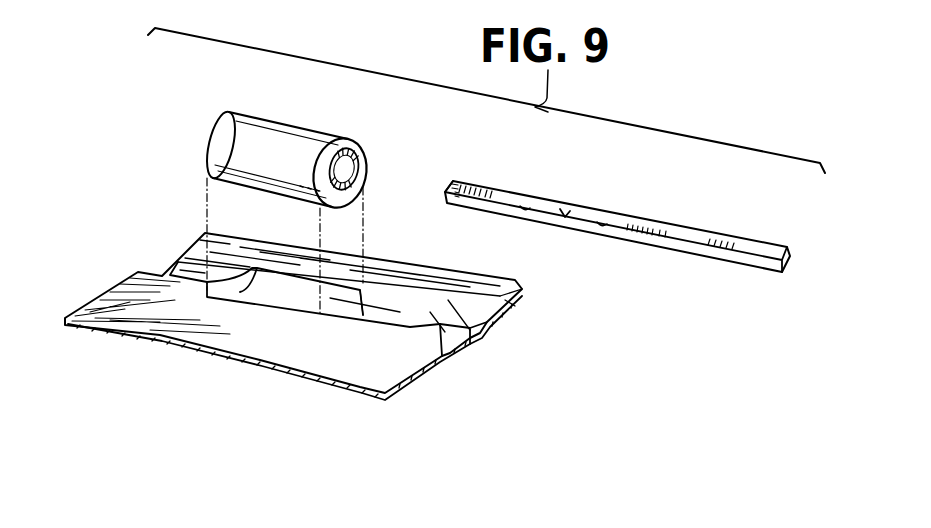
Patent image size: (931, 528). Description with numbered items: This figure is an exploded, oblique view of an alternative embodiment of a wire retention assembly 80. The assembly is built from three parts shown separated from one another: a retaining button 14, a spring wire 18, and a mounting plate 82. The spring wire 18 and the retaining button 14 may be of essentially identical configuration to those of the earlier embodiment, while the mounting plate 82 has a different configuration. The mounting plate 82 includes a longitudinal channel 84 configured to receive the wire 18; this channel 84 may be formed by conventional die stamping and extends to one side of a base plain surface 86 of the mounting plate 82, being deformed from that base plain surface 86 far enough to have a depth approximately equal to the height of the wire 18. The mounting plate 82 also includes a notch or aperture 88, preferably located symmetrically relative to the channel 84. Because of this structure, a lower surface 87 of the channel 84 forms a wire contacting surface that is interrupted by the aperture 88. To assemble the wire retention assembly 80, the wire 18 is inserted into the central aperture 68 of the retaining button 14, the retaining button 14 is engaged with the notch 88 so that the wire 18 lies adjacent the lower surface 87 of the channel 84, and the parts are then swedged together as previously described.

The retaining button 14 is at (229, 112).
The central aperture 68 is at (356, 166).
The spring wire 18 is at (697, 255).
The wire retention assembly 80 is at (342, 362).
The mounting plate 82 is at (347, 393).
The longitudinal channel 84 is at (487, 352).
The base plain surface 86 is at (525, 298).
The lower surface 87 is at (445, 332).
The notch 88 is at (256, 300).